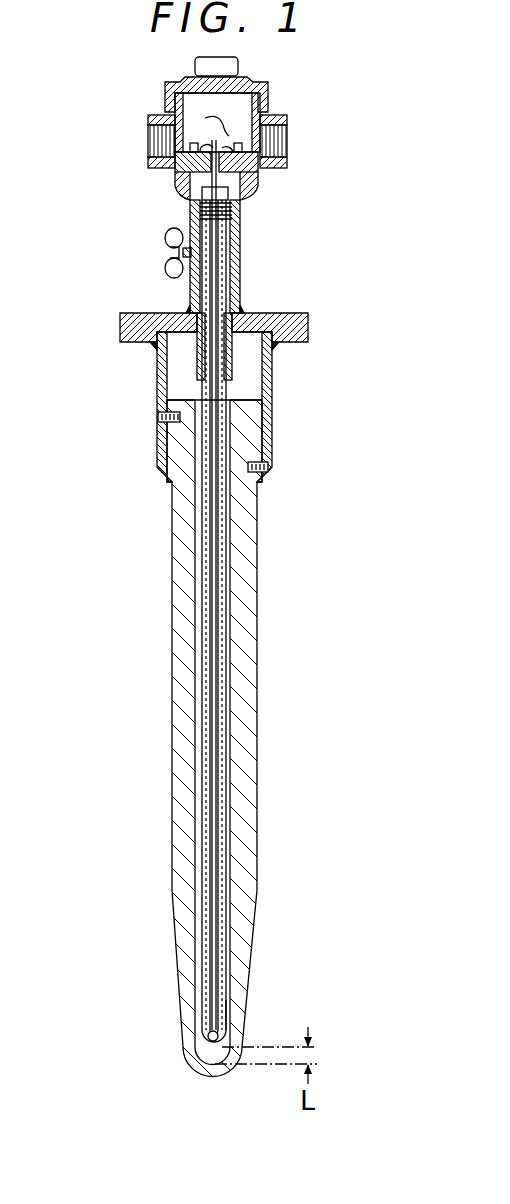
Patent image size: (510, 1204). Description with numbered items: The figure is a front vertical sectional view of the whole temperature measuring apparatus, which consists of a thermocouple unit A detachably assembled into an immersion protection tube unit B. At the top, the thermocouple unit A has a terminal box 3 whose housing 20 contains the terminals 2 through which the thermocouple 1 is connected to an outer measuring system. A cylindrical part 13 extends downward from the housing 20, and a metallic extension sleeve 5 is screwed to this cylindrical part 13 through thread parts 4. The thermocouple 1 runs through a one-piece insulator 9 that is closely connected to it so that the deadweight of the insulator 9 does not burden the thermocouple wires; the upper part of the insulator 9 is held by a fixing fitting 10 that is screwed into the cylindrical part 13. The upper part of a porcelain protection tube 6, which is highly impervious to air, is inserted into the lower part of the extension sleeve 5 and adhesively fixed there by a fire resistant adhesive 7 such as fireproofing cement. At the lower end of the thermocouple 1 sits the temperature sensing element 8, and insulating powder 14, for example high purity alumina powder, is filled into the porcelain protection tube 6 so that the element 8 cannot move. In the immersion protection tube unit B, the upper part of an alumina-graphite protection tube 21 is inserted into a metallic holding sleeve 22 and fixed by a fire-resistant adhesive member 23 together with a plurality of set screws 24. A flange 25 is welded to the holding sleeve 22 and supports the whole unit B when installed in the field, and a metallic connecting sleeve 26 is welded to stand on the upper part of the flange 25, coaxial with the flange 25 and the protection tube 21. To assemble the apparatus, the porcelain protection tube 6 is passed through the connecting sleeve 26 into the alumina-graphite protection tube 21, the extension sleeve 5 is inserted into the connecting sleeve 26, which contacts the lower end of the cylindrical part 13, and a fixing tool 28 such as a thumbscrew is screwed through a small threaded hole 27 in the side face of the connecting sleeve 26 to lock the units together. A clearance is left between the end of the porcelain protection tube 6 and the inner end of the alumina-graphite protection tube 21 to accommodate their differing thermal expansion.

The thermocouple 1 is at (217, 122).
The terminals 2 is at (160, 171).
The terminal box 3 is at (149, 102).
The thread parts 4 is at (232, 208).
The extension sleeve 5 is at (232, 258).
The porcelain protection tube 6 is at (224, 673).
The fire resistant adhesive 7 is at (231, 382).
The temperature sensing element 8 is at (228, 1012).
The insulator 9 is at (216, 738).
The fixing fitting 10 is at (201, 194).
The cylindrical part 13 is at (171, 218).
The insulating powder 14 is at (206, 1040).
The housing 20 is at (144, 141).
The alumina-graphite protection tube 21 is at (171, 595).
The holding sleeve 22 is at (157, 378).
The fire-resistant adhesive member 23 is at (168, 500).
The set screws 24 is at (158, 417).
The flange 25 is at (308, 329).
The connecting sleeve 26 is at (240, 288).
The small threaded hole 27 is at (188, 273).
The fixing tool 28 is at (166, 252).
The thermocouple unit A is at (310, 203).
The immersion protection tube unit B is at (280, 537).